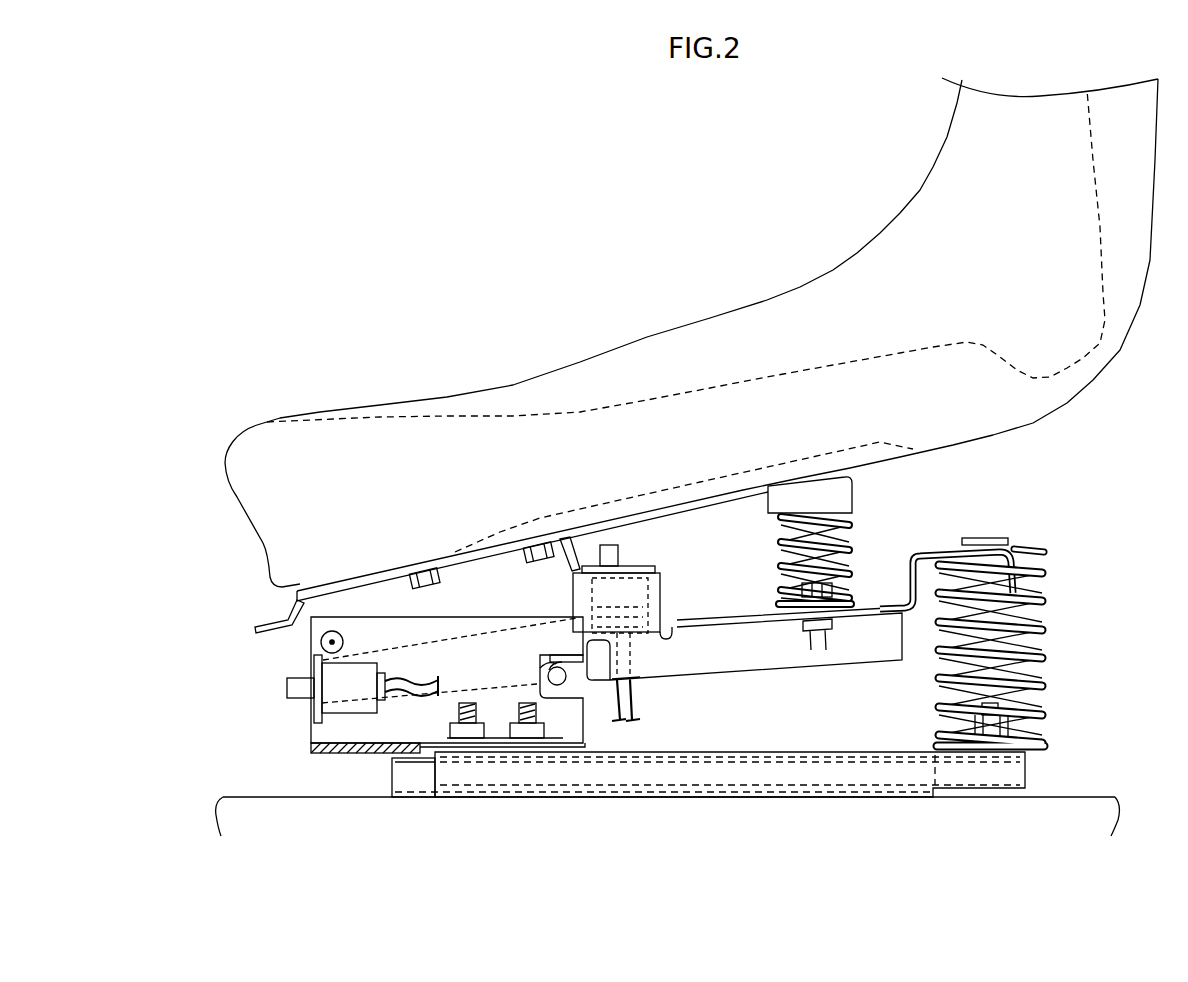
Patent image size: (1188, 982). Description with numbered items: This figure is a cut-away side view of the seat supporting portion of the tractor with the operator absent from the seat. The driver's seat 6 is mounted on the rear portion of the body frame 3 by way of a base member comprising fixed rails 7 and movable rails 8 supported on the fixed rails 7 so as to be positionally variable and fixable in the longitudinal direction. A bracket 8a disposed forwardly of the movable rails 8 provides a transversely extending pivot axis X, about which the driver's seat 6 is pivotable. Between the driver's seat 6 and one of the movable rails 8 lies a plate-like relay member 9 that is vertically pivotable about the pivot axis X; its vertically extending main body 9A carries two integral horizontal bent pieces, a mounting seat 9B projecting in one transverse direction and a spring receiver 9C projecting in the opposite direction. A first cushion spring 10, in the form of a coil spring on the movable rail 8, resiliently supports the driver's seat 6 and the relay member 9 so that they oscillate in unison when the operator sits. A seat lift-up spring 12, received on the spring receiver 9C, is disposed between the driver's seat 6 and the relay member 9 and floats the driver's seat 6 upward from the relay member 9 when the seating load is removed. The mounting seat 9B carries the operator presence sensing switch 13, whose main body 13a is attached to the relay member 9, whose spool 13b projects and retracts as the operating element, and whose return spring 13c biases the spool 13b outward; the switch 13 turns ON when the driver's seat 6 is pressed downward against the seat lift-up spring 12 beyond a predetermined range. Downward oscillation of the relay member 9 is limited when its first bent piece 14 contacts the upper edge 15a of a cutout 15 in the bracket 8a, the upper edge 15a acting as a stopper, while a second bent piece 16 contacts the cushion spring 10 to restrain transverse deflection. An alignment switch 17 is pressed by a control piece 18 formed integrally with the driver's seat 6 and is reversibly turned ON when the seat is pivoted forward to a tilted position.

The body frame 3 is at (246, 796).
The driver's seat 6 is at (653, 330).
The fixed rails 7 is at (390, 768).
The movable rails 8 is at (1027, 772).
The bracket 8a is at (318, 732).
The relay member 9 is at (752, 671).
The main body 9A is at (663, 673).
The mounting seat 9B is at (574, 568).
The spring receiver 9C is at (877, 614).
The first cushion spring 10 is at (1047, 662).
The seat lift-up spring 12 is at (851, 546).
The operator presence sensing switch 13 is at (647, 610).
The main body 13a is at (648, 641).
The spool 13b is at (620, 547).
The return spring 13c is at (655, 570).
The first bent piece 14 is at (540, 680).
The cutout 15 is at (584, 712).
The upper edge 15a is at (538, 663).
The second bent piece 16 is at (1046, 580).
The alignment switch 17 is at (285, 687).
The control piece 18 is at (262, 620).
The pivot axis X is at (318, 644).